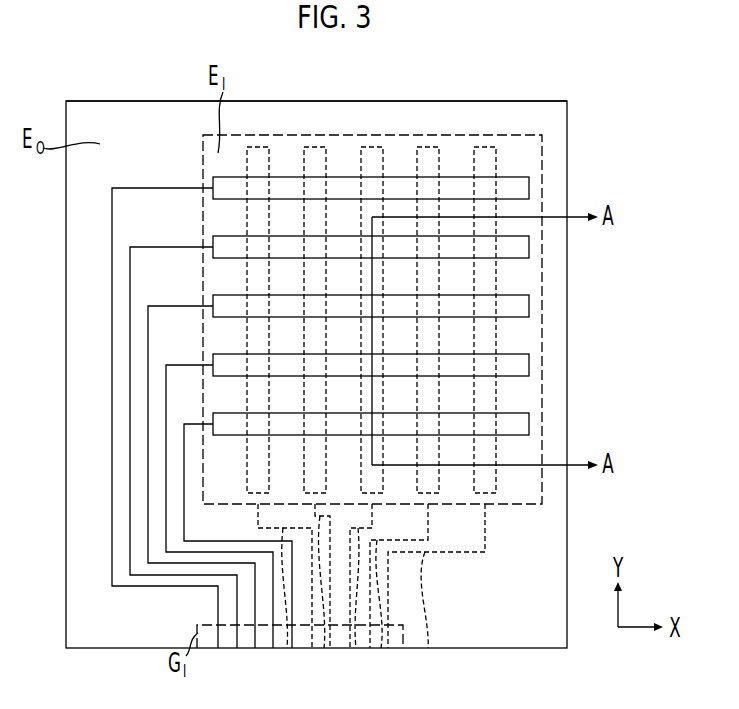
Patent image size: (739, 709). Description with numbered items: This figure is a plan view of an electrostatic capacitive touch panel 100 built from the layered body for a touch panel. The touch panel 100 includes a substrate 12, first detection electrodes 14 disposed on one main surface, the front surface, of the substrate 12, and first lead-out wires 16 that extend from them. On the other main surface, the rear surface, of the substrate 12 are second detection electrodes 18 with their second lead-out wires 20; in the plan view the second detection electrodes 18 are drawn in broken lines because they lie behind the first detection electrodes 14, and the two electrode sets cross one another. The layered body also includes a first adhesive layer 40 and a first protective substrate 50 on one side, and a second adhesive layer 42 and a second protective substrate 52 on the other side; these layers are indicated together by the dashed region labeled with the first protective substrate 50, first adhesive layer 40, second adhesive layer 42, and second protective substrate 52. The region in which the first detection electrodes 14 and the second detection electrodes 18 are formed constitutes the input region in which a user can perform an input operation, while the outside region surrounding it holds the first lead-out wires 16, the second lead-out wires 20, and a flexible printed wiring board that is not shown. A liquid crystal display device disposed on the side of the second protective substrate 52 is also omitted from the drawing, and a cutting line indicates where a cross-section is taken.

The electrostatic capacitive touch panel 100 is at (560, 79).
The substrate 12 is at (567, 127).
The first detection electrodes 14 is at (529, 188).
The first lead-out wires 16 is at (112, 268).
The second detection electrodes 18 is at (258, 147).
The second lead-out wires 20 is at (287, 648).
The first protective substrate 50 is at (454, 323).
The first adhesive layer 40 is at (454, 323).
The second adhesive layer 42 is at (454, 323).
The second protective substrate 52 is at (542, 490).